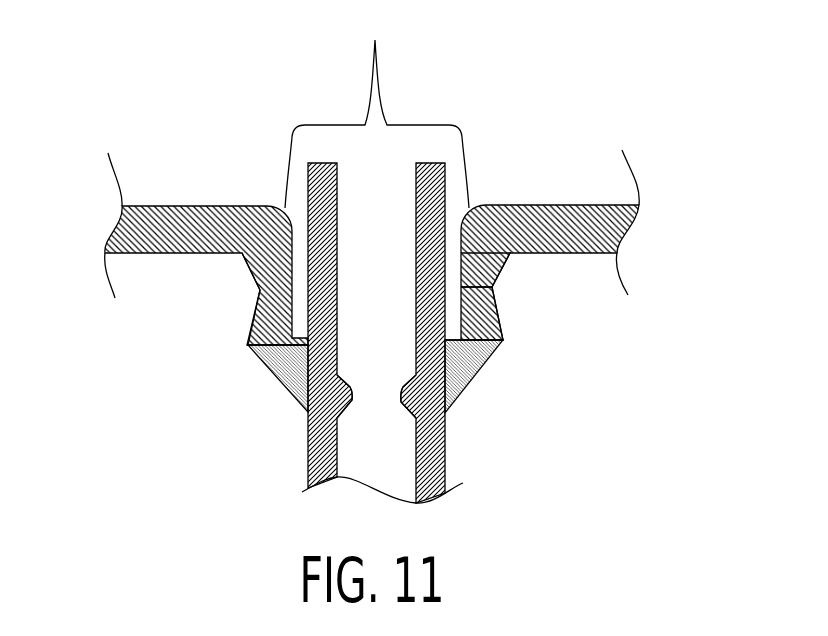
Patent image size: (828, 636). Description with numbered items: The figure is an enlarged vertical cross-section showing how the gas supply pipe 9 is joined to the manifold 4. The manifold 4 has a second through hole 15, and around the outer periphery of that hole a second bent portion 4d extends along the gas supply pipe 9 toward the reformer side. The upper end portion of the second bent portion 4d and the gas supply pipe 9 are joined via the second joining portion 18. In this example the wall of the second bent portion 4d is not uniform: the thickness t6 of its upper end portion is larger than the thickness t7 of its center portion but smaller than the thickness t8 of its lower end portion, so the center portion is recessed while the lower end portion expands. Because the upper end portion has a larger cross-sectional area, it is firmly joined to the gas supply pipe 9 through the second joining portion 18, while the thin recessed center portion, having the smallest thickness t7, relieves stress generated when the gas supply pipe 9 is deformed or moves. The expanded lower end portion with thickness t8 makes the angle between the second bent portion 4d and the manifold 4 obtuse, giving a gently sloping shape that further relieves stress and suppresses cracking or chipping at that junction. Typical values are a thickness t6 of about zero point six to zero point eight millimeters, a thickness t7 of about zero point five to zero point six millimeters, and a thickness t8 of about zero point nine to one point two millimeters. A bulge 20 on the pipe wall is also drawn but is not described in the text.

The manifold 4 is at (162, 206).
The second bent portion 4d is at (257, 298).
The gas supply pipe 9 is at (308, 442).
The second through hole 15 is at (375, 70).
The second joining portion 18 is at (470, 368).
The crimped bulge portion of pipe 20 is at (445, 413).
The thickness of upper end portion of second bent portion t6 is at (498, 325).
The thickness of center portion of second bent portion t7 is at (492, 283).
The thickness of lower end portion of second bent portion t8 is at (487, 250).